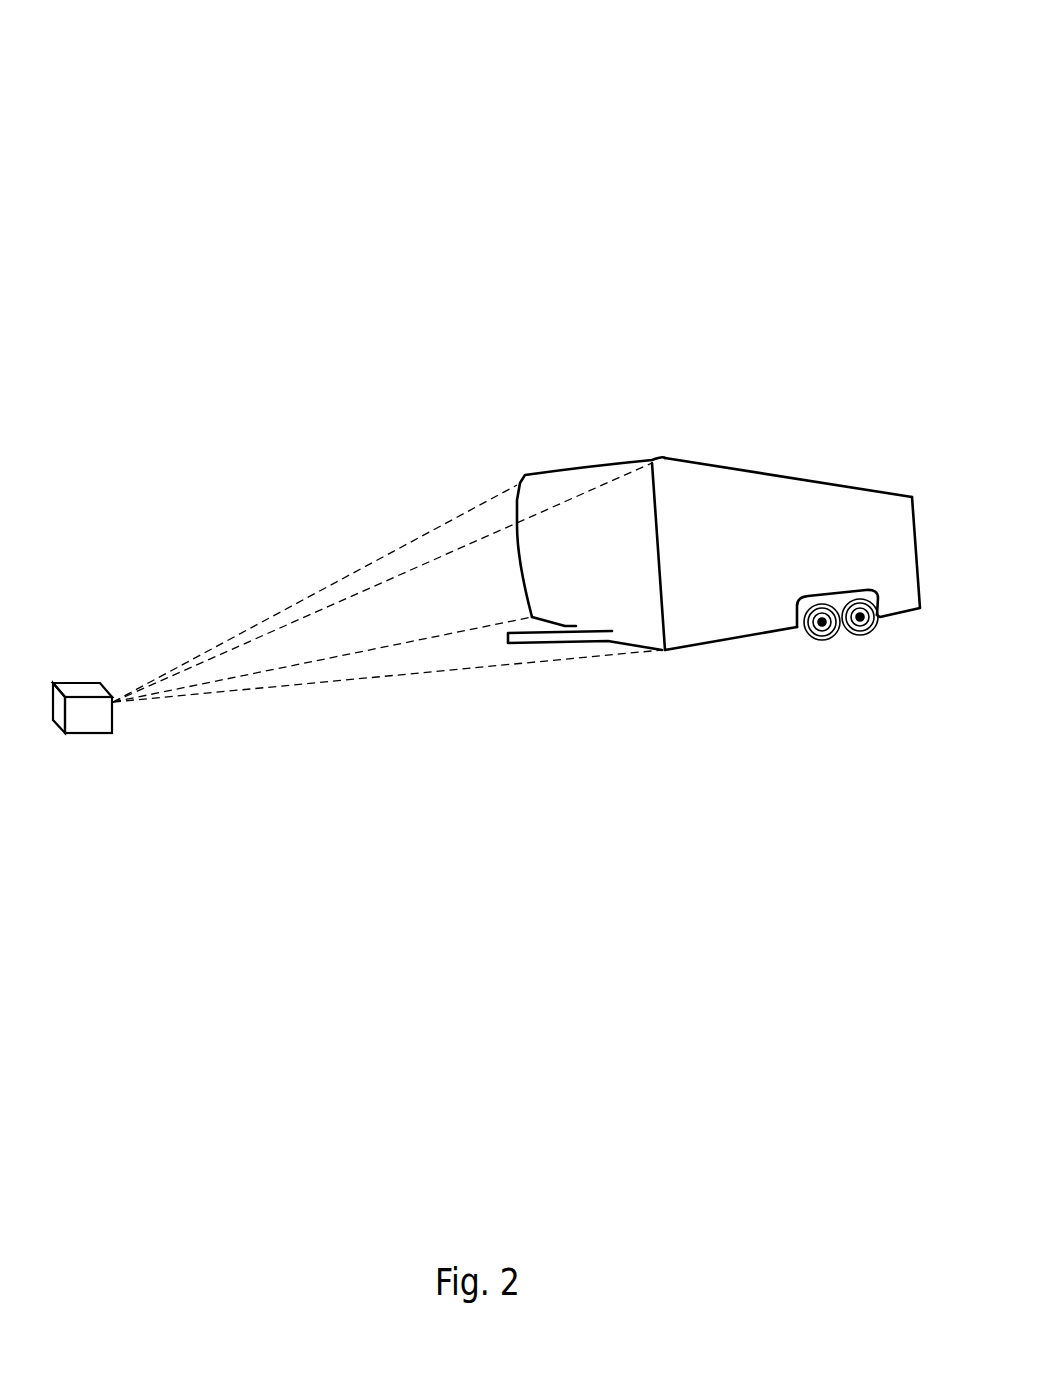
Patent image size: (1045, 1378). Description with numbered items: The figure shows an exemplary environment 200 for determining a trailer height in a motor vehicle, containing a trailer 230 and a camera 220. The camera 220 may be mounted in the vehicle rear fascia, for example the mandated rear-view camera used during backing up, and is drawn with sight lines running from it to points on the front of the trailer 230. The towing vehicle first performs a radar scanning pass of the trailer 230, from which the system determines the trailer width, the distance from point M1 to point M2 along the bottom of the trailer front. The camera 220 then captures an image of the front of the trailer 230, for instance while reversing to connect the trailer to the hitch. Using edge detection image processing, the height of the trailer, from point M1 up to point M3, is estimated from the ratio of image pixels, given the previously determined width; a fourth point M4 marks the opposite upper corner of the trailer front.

The exemplary environment 200 is at (512, 42).
The camera 220 is at (88, 662).
The trailer 230 is at (707, 452).
The trailer width and height reference point M1 is at (338, 645).
The trailer width reference point M2 is at (387, 655).
The trailer height reference point M3 is at (336, 593).
The trailer feature marker M4 is at (382, 582).